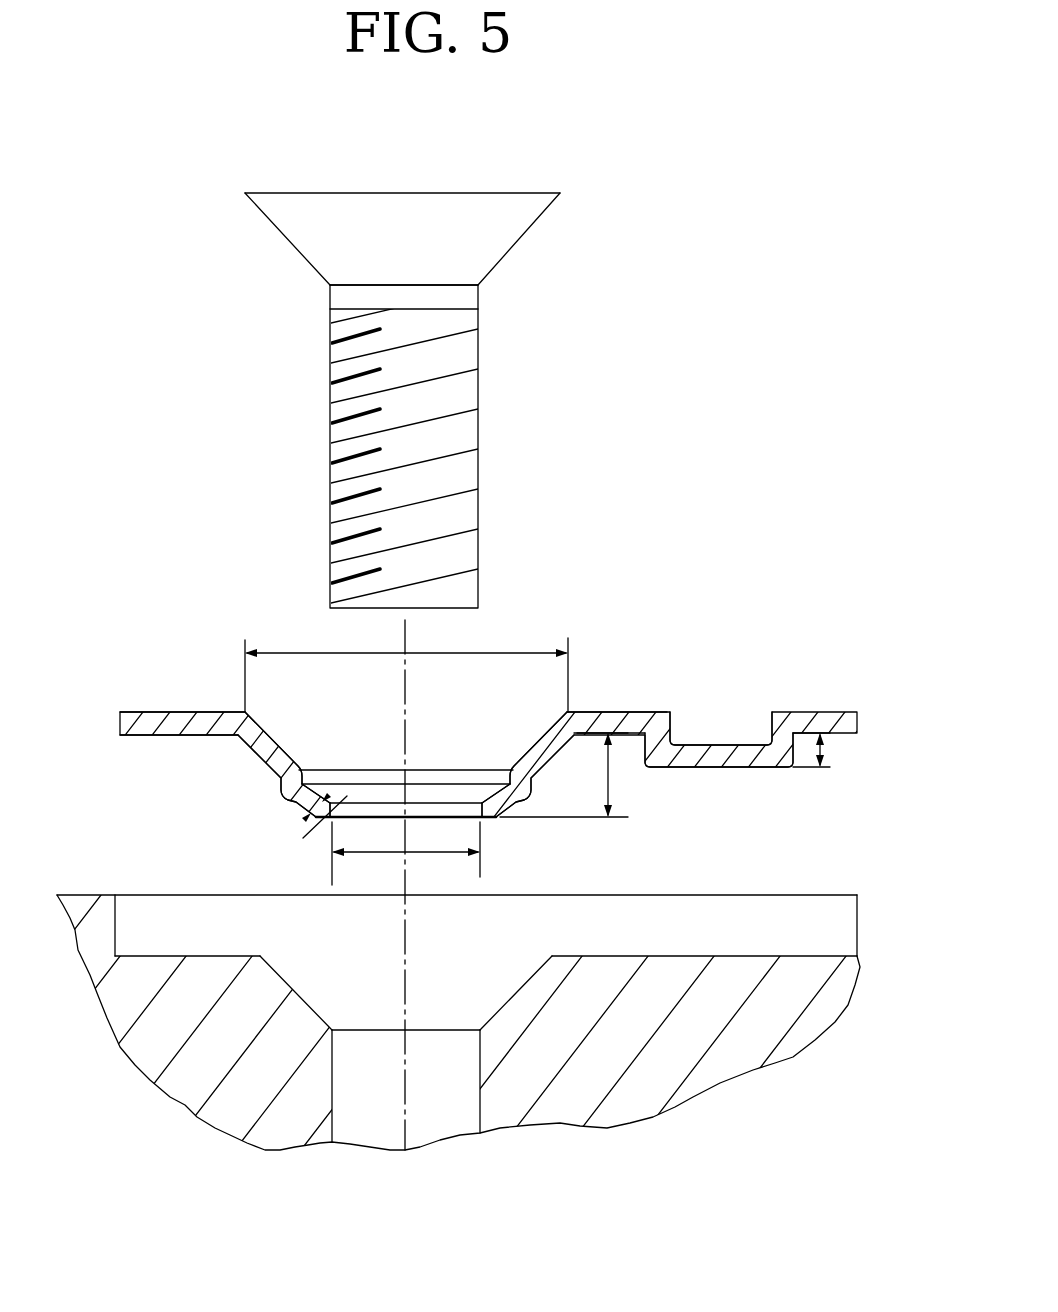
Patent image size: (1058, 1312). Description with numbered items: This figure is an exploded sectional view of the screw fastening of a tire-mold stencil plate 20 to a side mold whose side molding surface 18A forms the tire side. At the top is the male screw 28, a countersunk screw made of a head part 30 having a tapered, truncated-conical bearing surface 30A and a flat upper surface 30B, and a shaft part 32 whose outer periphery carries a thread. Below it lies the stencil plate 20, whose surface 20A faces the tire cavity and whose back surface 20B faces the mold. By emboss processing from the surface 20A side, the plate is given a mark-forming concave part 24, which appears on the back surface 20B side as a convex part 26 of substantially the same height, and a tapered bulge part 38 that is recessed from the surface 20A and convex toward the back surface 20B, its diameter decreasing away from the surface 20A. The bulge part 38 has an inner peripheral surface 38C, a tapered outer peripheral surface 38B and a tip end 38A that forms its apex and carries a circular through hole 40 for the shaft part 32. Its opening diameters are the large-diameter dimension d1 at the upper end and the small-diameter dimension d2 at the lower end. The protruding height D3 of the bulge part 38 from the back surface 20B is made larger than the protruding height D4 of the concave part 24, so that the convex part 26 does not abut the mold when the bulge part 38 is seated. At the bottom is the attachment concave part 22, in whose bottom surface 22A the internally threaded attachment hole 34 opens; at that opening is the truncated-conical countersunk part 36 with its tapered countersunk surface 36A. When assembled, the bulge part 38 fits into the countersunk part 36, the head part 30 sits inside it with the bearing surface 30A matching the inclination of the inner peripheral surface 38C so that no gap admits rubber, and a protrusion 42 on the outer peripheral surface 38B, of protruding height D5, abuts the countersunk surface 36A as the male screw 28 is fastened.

The side molding surface 18A is at (78, 895).
The stencil plate 20 is at (465, 746).
The surface of the stencil plate 20A is at (157, 712).
The back surface of the stencil plate 20B is at (147, 735).
The attachment concave part 22 is at (446, 1015).
The bottom surface of the attachment concave part 22A is at (675, 953).
The concave part 24 is at (768, 730).
The convex part 26 is at (753, 768).
The male screw 28 is at (439, 362).
The head part 30 is at (427, 200).
The bearing surface 30A is at (507, 253).
The upper surface of the head part 30B is at (473, 192).
The shaft part 32 is at (470, 438).
The attachment hole 34 is at (472, 1128).
The countersunk part 36 is at (409, 934).
The countersunk surface 36A is at (297, 987).
The bulge part 38 is at (390, 783).
The tip end of the bulge part 38A is at (492, 820).
The outer peripheral surface of the bulge part 38B is at (540, 767).
The inner peripheral surface of the bulge part 38C is at (530, 750).
The through hole 40 is at (363, 820).
The protrusion 42 is at (283, 800).
The large-diameter dimension of the bulge part d1 is at (500, 652).
The small-diameter dimension of the bulge part d2 is at (430, 853).
The protruding height of the bulge part D3 is at (572, 775).
The protruding height of the concave part D4 is at (823, 752).
The protruding height of the protrusion D5 is at (323, 830).